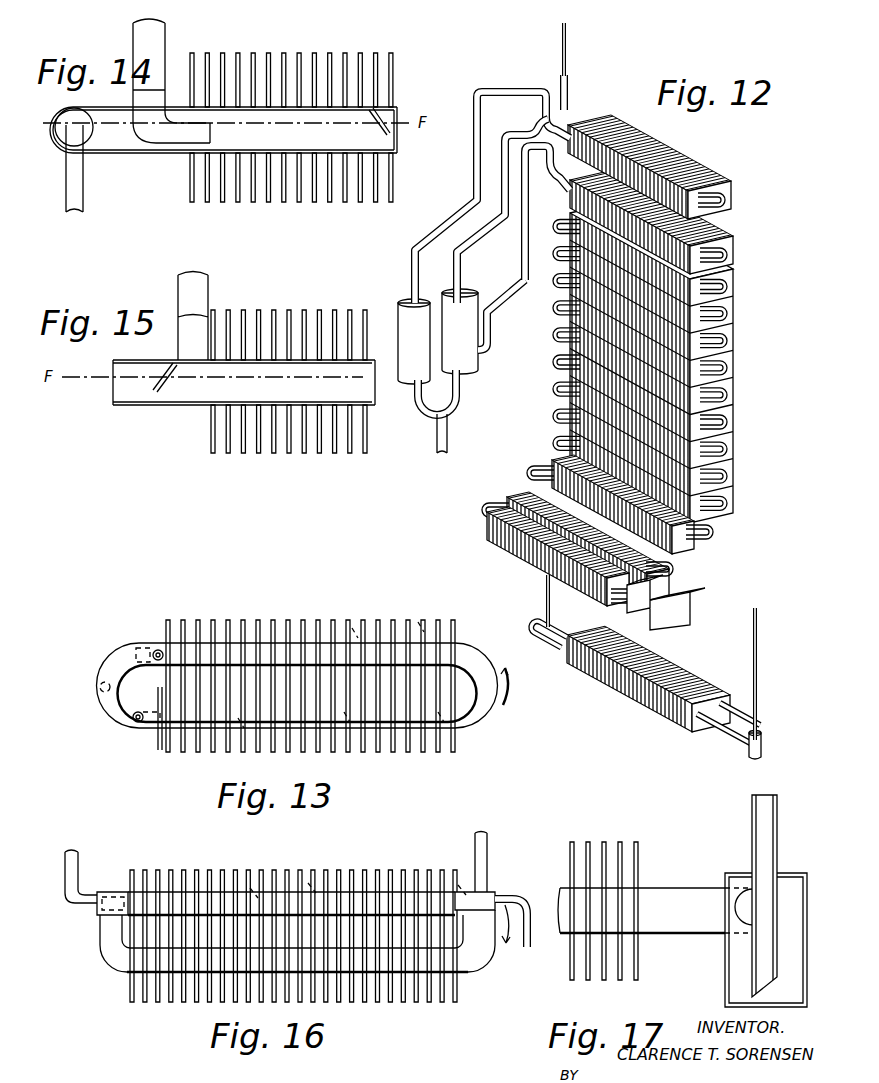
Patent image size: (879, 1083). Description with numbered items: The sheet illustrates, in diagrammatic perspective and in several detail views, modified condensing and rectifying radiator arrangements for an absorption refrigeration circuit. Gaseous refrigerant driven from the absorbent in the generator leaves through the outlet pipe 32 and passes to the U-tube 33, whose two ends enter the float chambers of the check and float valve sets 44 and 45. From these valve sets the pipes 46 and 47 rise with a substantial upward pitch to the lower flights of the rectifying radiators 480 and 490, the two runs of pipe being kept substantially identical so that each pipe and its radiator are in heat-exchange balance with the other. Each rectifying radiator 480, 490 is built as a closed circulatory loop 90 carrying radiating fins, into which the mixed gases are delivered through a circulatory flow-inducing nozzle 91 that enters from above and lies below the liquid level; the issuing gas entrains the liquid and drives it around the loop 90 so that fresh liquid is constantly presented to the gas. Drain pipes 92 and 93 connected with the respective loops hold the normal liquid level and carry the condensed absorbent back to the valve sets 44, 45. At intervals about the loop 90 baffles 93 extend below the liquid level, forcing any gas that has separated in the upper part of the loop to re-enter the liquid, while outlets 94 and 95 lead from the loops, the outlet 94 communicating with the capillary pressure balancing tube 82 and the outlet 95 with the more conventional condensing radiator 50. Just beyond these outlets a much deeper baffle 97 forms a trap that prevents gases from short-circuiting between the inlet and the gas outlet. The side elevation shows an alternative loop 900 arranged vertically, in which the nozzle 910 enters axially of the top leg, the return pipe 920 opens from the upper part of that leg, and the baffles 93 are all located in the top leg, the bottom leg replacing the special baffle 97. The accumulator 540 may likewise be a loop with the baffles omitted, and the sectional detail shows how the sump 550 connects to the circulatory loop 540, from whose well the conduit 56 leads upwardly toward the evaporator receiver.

In FIG. 12, the outlet pipe 32 is at (444, 446).
In FIG. 12, the U-tube 33 is at (460, 392).
In FIG. 12, the valve set 44 is at (412, 382).
In FIG. 12, the valve set 45 is at (480, 353).
In FIG. 14, the pipe 46 is at (153, 50).
In FIG. 12, the pipe 46 is at (473, 187).
In FIG. 13, the pipe 46 is at (132, 722).
In FIG. 16, the pipe 46 is at (80, 870).
In FIG. 12, the pipe 47 is at (521, 240).
In FIG. 12, the condensing radiator 50 is at (733, 380).
In FIG. 12, the conduit 56 is at (757, 662).
In FIG. 17, the conduit 56 is at (778, 853).
In FIG. 12, the capillary pressure balancing tube 82 is at (566, 48).
In FIG. 14, the closed circulatory loop 90 is at (375, 107).
In FIG. 15, the closed circulatory loop 90 is at (203, 400).
In FIG. 12, the closed circulatory loop 90 is at (732, 263).
In FIG. 13, the closed circulatory loop 90 is at (468, 645).
In FIG. 14, the circulatory flow-inducing nozzle 91 is at (199, 133).
In FIG. 12, the circulatory flow-inducing nozzle 91 is at (572, 116).
In FIG. 13, the circulatory flow-inducing nozzle 91 is at (153, 728).
In FIG. 14, the drain pipe 92 is at (82, 170).
In FIG. 12, the drain pipe 92 is at (503, 163).
In FIG. 13, the drain pipe 92 is at (103, 693).
In FIG. 14, the baffle 93 is at (393, 118).
In FIG. 12, the baffle 93 is at (519, 297).
In FIG. 13, the baffle 93 is at (440, 730).
In FIG. 16, the baffle 93 is at (463, 880).
In FIG. 15, the outlet 94 is at (200, 303).
In FIG. 12, the outlet 94 is at (570, 95).
In FIG. 13, the outlet 94 is at (156, 650).
In FIG. 16, the outlet 94 is at (487, 858).
In FIG. 12, the outlet 95 is at (523, 130).
In FIG. 15, the deep baffle 97 is at (167, 393).
In FIG. 13, the deep baffle 97 is at (135, 648).
In FIG. 12, the rectifying radiator 480 is at (690, 158).
In FIG. 12, the rectifying radiator 490 is at (730, 236).
In FIG. 12, the accumulator 540 is at (712, 732).
In FIG. 17, the accumulator 540 is at (675, 893).
In FIG. 12, the sump 550 is at (763, 752).
In FIG. 17, the sump 550 is at (724, 978).
In FIG. 16, the loop 900 is at (472, 890).
In FIG. 16, the nozzle 910 is at (118, 898).
In FIG. 16, the return pipe 920 is at (542, 938).